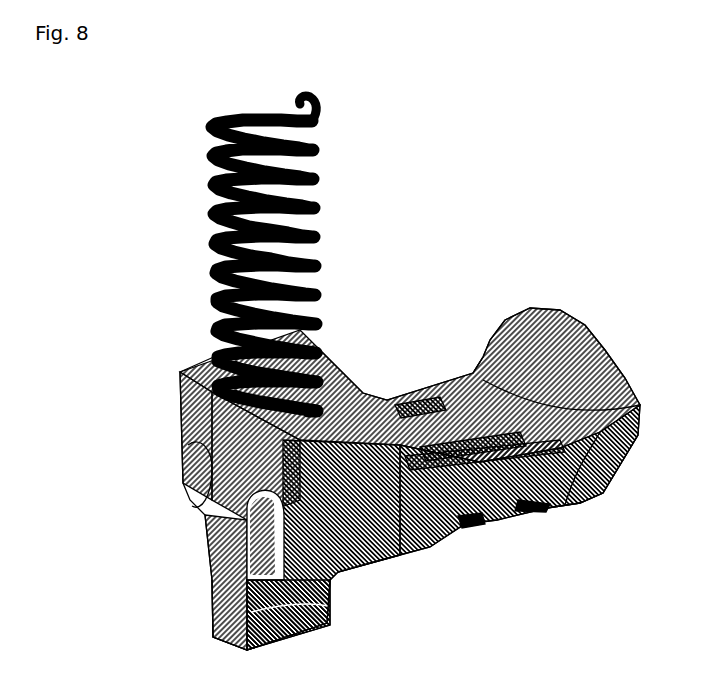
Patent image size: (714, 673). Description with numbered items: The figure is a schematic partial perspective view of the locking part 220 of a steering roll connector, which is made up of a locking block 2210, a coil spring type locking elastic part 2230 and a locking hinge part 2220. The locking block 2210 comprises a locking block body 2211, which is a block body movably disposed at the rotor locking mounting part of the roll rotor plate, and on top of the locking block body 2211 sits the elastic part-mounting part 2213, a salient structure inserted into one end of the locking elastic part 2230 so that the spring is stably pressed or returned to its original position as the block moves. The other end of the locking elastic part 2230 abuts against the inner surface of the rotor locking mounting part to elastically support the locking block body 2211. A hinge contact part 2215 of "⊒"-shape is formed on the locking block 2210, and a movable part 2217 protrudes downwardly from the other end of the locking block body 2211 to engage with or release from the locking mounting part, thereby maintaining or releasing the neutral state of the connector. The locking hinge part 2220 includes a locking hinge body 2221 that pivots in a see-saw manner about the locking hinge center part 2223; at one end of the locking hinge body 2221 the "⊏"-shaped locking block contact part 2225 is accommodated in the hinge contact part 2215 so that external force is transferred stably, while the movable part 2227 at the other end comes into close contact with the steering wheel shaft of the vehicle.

The locking part 220 is at (548, 162).
The locking block 2210 is at (503, 208).
The locking block body 2211 is at (303, 433).
The elastic part-mounting part 2213 is at (277, 322).
The hinge contact part 2215 is at (273, 500).
The movable part 2217 is at (330, 618).
The locking hinge part 2220 is at (661, 503).
The locking hinge body 2221 is at (550, 507).
The locking hinge center part 2223 is at (478, 518).
The locking block contact part 2225 is at (397, 542).
The movable part 2227 is at (604, 458).
The locking elastic part 2230 is at (298, 230).